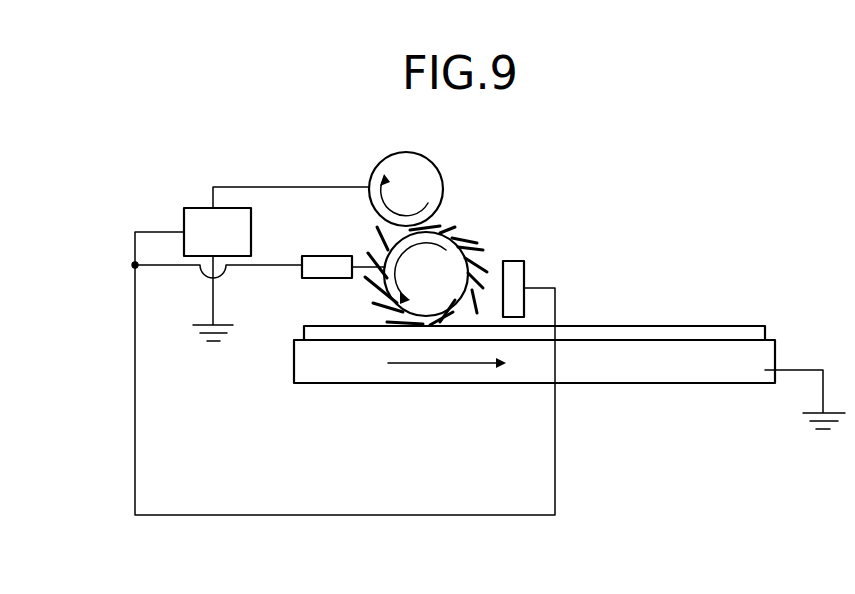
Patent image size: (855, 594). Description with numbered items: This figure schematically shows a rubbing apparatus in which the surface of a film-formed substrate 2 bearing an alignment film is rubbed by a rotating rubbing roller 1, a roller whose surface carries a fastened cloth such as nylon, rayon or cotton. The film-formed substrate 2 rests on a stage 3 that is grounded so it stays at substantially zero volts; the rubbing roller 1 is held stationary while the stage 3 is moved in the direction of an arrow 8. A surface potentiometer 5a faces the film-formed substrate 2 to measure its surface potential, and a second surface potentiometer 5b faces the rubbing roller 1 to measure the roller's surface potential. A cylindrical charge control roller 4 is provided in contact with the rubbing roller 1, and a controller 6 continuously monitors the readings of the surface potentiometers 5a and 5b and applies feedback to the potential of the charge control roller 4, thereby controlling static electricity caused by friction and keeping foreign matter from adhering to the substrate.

The rubbing roller 1 is at (482, 228).
The film-formed substrate 2 is at (623, 326).
The stage 3 is at (603, 390).
The charge control roller 4 is at (392, 154).
The surface potentiometer 5a is at (305, 282).
The surface potentiometer 5b is at (526, 273).
The controller 6 is at (195, 208).
The arrow 8 is at (418, 368).